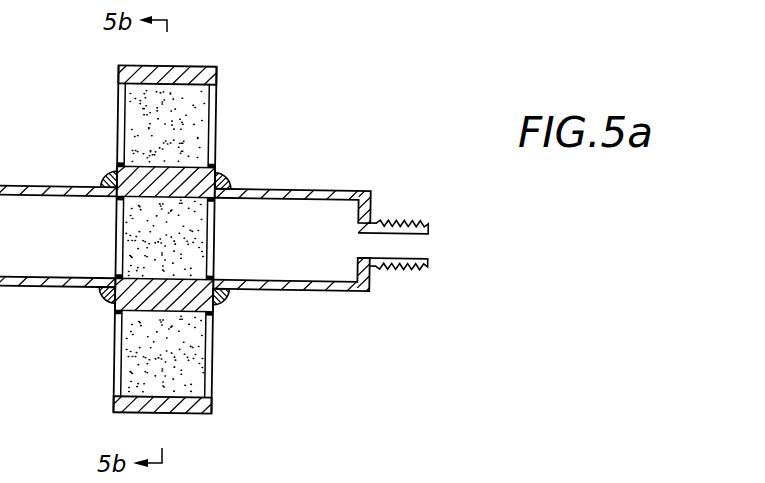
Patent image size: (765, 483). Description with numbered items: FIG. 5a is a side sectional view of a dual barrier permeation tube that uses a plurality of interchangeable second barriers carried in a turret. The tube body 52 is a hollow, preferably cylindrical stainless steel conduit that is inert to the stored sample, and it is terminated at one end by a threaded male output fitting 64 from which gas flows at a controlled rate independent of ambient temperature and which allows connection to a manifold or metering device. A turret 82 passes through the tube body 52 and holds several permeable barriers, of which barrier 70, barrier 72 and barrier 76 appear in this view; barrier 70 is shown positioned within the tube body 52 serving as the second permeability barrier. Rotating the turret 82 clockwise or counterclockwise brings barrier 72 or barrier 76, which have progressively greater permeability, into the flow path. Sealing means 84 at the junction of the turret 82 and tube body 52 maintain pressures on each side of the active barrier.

The tube body 52 is at (327, 189).
The output fitting 64 is at (406, 218).
The permeable barrier 70 is at (194, 238).
The permeable barrier 72 is at (191, 117).
The permeable barrier 76 is at (190, 362).
The turret 82 is at (216, 67).
The sealing means 84 is at (104, 177).